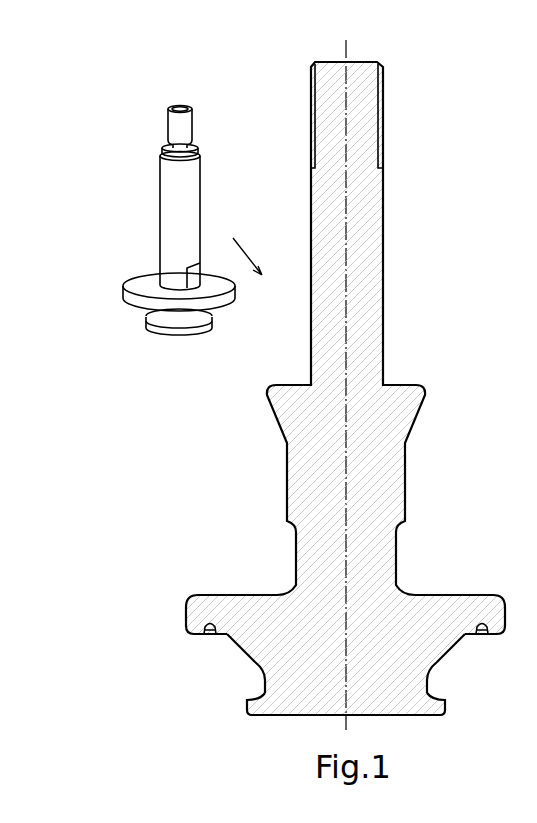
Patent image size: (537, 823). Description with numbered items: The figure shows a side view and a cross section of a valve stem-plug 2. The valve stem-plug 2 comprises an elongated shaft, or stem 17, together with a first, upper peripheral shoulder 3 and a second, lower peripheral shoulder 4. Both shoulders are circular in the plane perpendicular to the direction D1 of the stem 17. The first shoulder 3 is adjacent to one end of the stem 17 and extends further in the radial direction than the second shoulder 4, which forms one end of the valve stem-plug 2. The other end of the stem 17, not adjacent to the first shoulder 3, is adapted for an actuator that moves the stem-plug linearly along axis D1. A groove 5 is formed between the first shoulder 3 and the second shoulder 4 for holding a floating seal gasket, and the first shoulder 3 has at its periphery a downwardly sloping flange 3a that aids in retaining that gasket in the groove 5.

The valve stem-plug 2 is at (116, 154).
The first upper peripheral shoulder 3 is at (494, 610).
The downwardly sloping flange 3a is at (211, 626).
The second lower peripheral shoulder 4 is at (443, 717).
The groove 5 is at (470, 663).
The stem 17 is at (365, 272).
The axis D1 is at (347, 370).